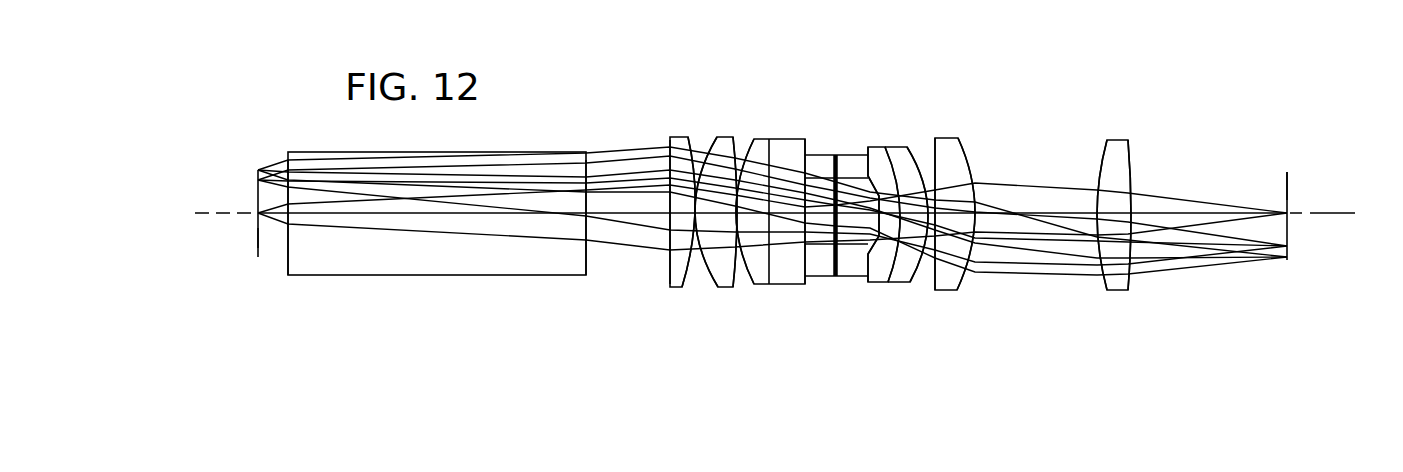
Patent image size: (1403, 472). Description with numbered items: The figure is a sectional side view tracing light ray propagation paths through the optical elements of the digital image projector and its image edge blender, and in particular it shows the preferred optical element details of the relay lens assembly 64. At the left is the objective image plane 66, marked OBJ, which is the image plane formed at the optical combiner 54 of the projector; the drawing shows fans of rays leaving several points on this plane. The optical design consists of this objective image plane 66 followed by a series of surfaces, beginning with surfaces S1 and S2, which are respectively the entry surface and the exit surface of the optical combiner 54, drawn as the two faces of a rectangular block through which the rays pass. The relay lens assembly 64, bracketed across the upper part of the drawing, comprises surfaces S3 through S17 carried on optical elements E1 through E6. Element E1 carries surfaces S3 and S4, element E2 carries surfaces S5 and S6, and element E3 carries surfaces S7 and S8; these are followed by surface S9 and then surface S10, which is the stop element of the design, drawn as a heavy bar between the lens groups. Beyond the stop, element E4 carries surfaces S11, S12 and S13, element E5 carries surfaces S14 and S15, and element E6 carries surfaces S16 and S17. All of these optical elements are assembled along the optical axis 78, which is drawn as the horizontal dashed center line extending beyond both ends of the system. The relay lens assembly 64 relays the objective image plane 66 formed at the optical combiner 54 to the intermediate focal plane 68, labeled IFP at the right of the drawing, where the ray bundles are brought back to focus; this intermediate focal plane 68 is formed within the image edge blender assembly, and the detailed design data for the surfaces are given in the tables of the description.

The optical combiner 54 is at (388, 262).
The relay lens assembly 64 is at (625, 78).
The objective image plane 66 is at (258, 238).
The intermediate focal plane 68 is at (1288, 192).
The optical axis 78 is at (214, 210).
The object OBJ is at (246, 196).
The intermediate focal plane IFP is at (1287, 235).
The entry surface of optical combiner S1 is at (288, 262).
The exit surface of optical combiner S2 is at (588, 265).
The surface S3 is at (668, 137).
The surface S4 is at (690, 137).
The surface S5 is at (717, 137).
The surface S6 is at (735, 137).
The surface S7 is at (756, 139).
The surface S8 is at (803, 139).
The surface S9 is at (808, 155).
The stop S10 is at (836, 155).
The surface S11 is at (868, 147).
The surface S12 is at (886, 147).
The surface S13 is at (908, 147).
The surface S14 is at (935, 138).
The surface S15 is at (960, 138).
The surface S16 is at (1107, 140).
The surface S17 is at (1140, 130).
The optical element E1 is at (680, 288).
The optical element E2 is at (726, 288).
The optical element E3 is at (790, 285).
The optical element E4 is at (888, 283).
The optical element E5 is at (945, 291).
The optical element E6 is at (1112, 291).